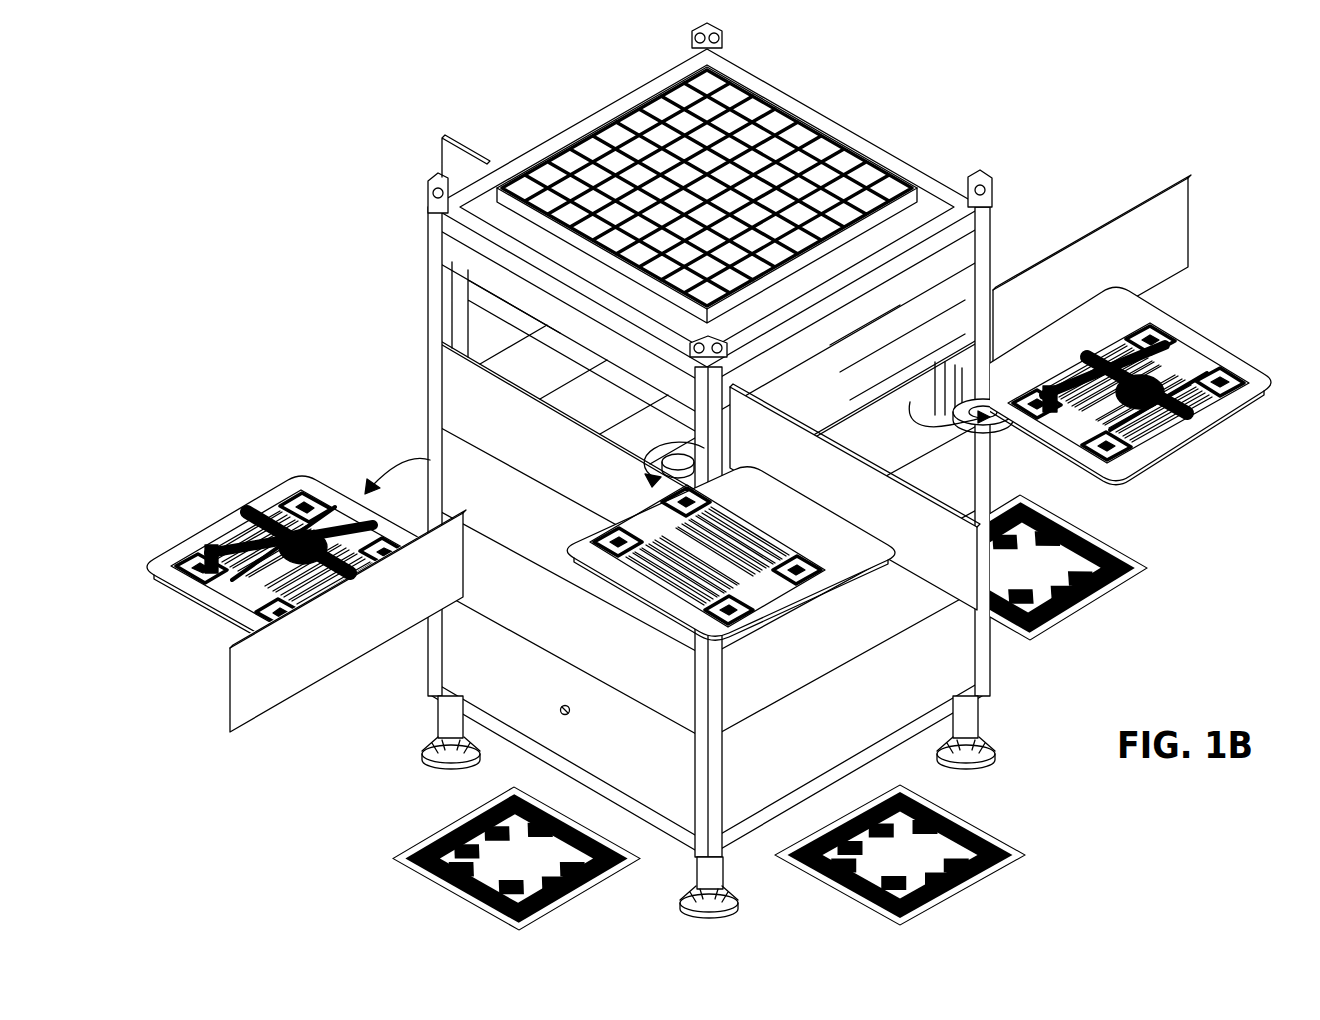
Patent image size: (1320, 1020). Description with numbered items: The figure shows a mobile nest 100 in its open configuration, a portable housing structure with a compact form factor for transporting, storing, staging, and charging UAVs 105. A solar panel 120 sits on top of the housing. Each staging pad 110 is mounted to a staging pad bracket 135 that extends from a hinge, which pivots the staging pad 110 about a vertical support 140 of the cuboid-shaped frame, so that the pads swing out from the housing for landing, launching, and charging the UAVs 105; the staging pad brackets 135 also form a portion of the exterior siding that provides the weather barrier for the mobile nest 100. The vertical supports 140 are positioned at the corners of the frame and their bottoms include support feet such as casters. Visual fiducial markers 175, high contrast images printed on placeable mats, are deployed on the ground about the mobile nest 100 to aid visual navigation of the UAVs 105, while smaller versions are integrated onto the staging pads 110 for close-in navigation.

The mobile nest 100 is at (686, 470).
The UAV 105 is at (250, 515).
The staging pad 110 is at (496, 126).
The solar panel 120 is at (707, 195).
The staging pad bracket 135 is at (453, 160).
The vertical support 140 is at (984, 643).
The visual fiducial marker 175 is at (772, 713).